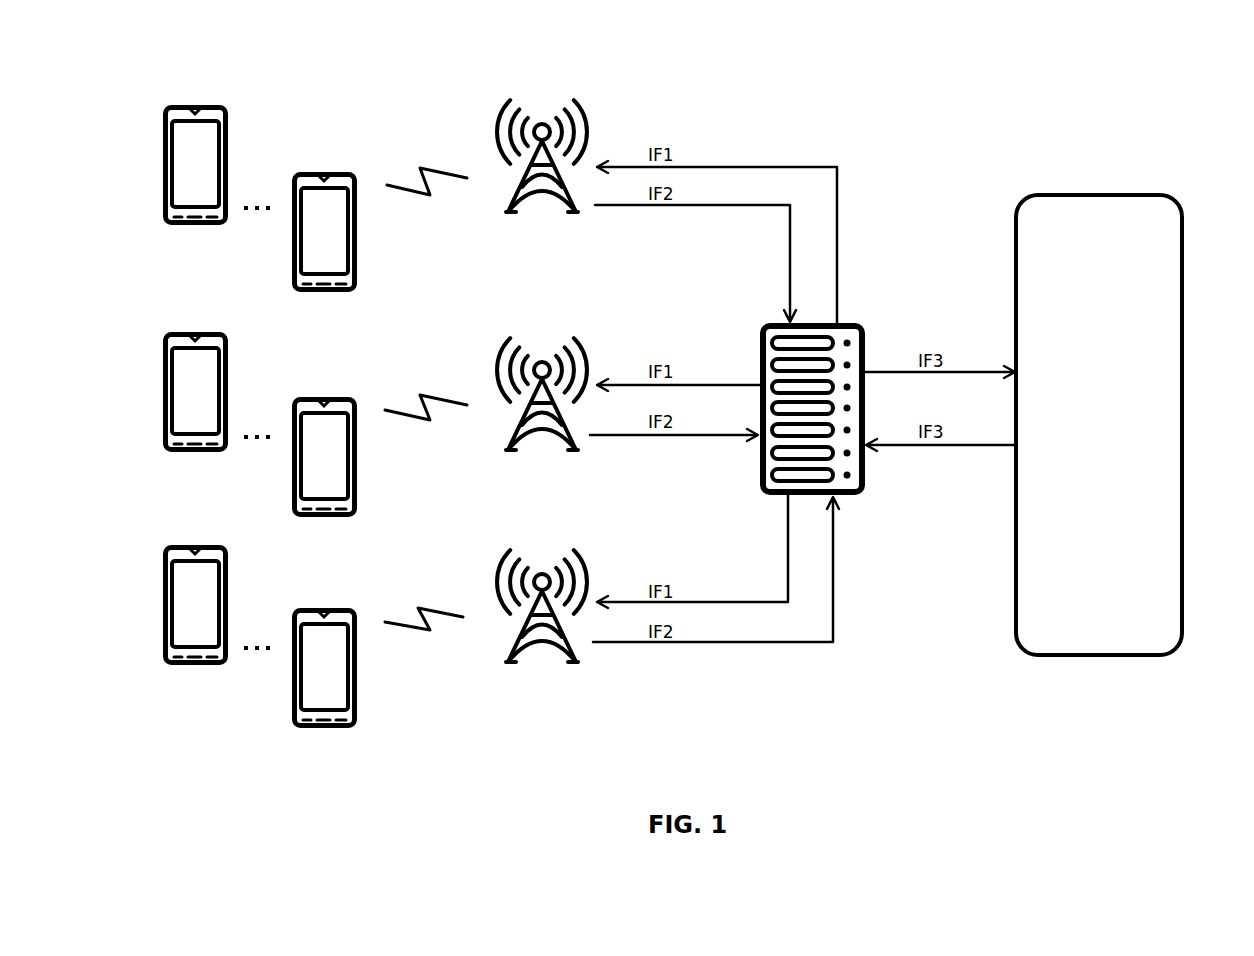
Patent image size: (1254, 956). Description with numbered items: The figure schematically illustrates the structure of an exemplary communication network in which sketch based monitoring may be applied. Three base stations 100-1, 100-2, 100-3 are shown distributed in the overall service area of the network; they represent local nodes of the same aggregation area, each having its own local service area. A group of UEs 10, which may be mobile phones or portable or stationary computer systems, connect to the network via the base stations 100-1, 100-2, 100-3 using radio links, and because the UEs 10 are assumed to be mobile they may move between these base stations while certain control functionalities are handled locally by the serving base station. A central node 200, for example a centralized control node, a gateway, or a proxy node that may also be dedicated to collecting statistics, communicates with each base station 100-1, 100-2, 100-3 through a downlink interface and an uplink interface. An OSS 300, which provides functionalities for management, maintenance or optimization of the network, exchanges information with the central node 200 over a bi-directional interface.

The UE 10 is at (183, 105).
The base station 100-1 is at (513, 214).
The base station 100-2 is at (513, 452).
The base station 100-3 is at (513, 664).
The central node 200 is at (867, 482).
The OSS 300 is at (1091, 657).